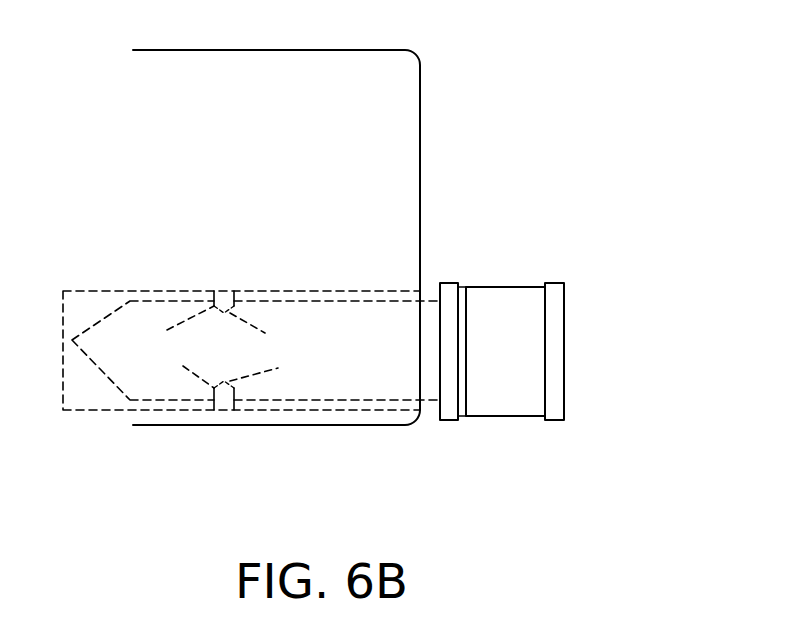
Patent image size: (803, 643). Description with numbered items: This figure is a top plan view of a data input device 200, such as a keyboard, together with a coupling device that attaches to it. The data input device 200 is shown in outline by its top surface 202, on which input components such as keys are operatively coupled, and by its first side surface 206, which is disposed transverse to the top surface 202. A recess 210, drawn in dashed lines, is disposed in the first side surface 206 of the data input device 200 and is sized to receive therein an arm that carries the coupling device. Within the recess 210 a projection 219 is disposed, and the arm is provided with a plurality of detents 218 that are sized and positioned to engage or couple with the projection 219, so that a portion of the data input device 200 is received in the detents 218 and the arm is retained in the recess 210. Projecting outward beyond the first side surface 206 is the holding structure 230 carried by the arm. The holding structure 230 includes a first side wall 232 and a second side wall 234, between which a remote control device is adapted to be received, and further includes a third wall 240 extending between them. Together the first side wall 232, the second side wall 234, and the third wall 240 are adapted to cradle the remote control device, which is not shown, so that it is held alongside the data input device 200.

The data input device 200 is at (287, 231).
The top surface 202 is at (413, 175).
The first side surface 206 is at (420, 108).
The recess 210 is at (133, 291).
The detents 218 is at (223, 350).
The projection 219 is at (223, 348).
The holding structure 230 is at (529, 376).
The first side wall 232 is at (452, 282).
The second side wall 234 is at (557, 282).
The third wall 240 is at (518, 408).